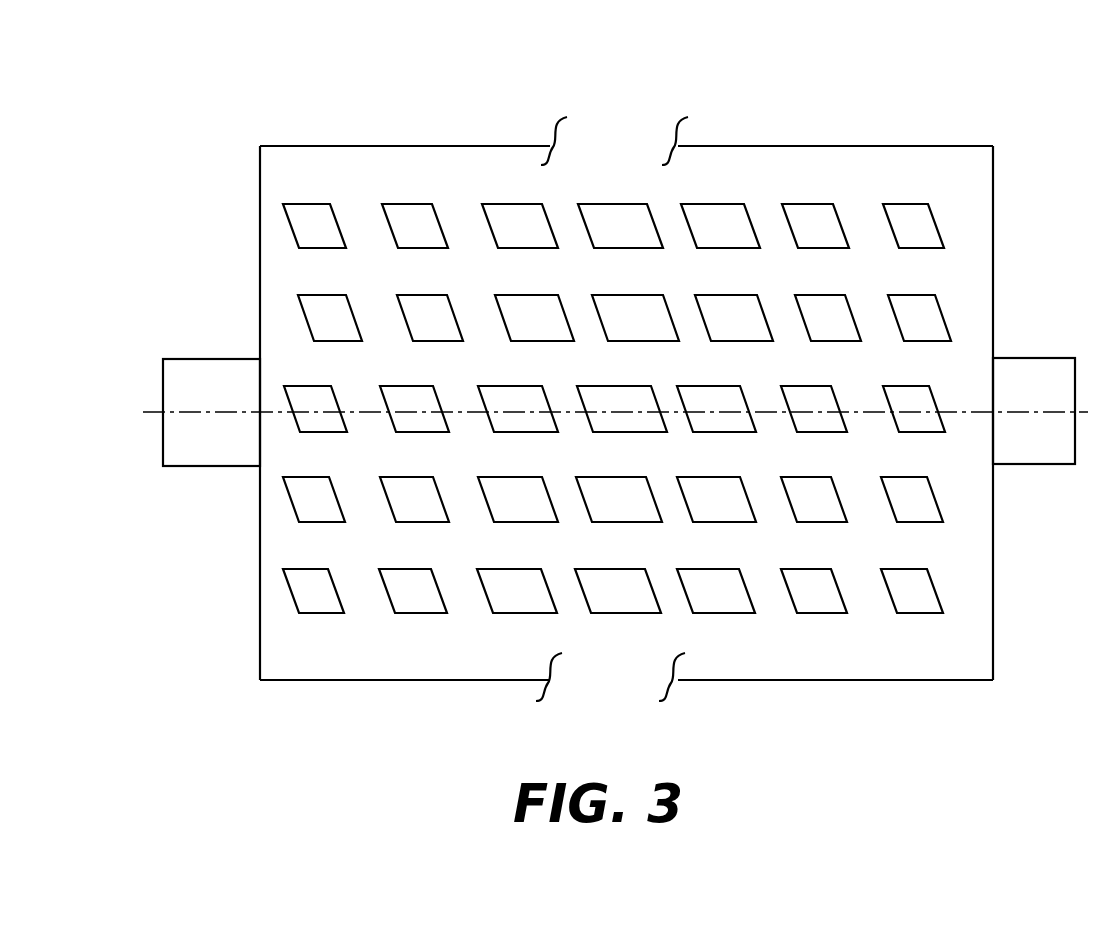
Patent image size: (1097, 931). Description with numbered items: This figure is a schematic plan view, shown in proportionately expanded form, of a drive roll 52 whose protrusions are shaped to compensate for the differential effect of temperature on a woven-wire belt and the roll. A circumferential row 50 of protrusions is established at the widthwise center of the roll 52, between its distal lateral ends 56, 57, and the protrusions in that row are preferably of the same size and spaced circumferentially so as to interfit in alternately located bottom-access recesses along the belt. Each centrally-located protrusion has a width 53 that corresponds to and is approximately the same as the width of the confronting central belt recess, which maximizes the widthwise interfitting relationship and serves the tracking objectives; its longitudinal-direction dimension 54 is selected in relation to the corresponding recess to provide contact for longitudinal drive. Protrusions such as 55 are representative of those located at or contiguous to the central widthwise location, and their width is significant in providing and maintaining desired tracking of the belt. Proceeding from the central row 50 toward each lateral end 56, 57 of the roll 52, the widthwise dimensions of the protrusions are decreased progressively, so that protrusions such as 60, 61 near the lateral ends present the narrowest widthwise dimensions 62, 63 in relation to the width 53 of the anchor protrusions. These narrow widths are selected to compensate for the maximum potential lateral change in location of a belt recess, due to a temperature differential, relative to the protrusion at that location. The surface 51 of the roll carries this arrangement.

The circumferential row of protrusions 50 is at (610, 620).
The drum surface 51 is at (863, 179).
The roll 52 is at (838, 100).
The width of protrusion 53 is at (649, 450).
The longitudinal-direction dimension 54 is at (655, 477).
The protrusion 55 is at (583, 598).
The lateral end of roll 56 is at (260, 590).
The lateral end of roll 57 is at (994, 636).
The protrusion near lateral end 60 is at (292, 503).
The protrusion near lateral end 61 is at (940, 500).
The narrowest widthwise dimension 62 is at (325, 468).
The narrowest widthwise dimension 63 is at (927, 468).